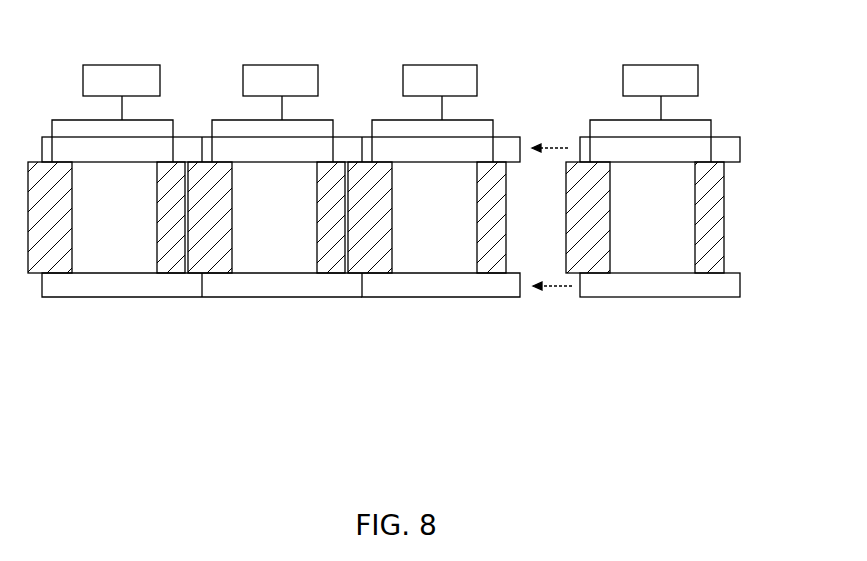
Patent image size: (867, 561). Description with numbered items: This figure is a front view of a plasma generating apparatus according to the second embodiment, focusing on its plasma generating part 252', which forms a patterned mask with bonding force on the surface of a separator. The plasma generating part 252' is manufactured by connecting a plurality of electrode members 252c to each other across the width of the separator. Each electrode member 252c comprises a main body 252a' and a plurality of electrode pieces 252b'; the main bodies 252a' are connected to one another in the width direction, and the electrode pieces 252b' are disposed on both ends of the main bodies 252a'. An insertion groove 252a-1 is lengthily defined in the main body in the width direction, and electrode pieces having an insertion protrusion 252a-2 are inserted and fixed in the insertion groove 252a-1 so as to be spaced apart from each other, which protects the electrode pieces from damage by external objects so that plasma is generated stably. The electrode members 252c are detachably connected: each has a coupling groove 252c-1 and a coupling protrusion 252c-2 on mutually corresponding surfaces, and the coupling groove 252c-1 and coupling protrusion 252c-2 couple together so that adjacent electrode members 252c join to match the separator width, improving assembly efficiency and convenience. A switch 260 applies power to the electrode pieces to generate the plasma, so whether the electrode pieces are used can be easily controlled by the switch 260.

The switch 260 is at (122, 65).
The plasma generating part 252' is at (649, 203).
The coupling groove 252c-1 is at (582, 138).
The coupling protrusion 252c-2 is at (520, 137).
The insertion groove 252a-1 is at (295, 304).
The insertion protrusion 252a-2 is at (563, 257).
The main body 252a' is at (201, 313).
The electrode piece 252b' is at (186, 258).
The electrode member 252c is at (186, 278).